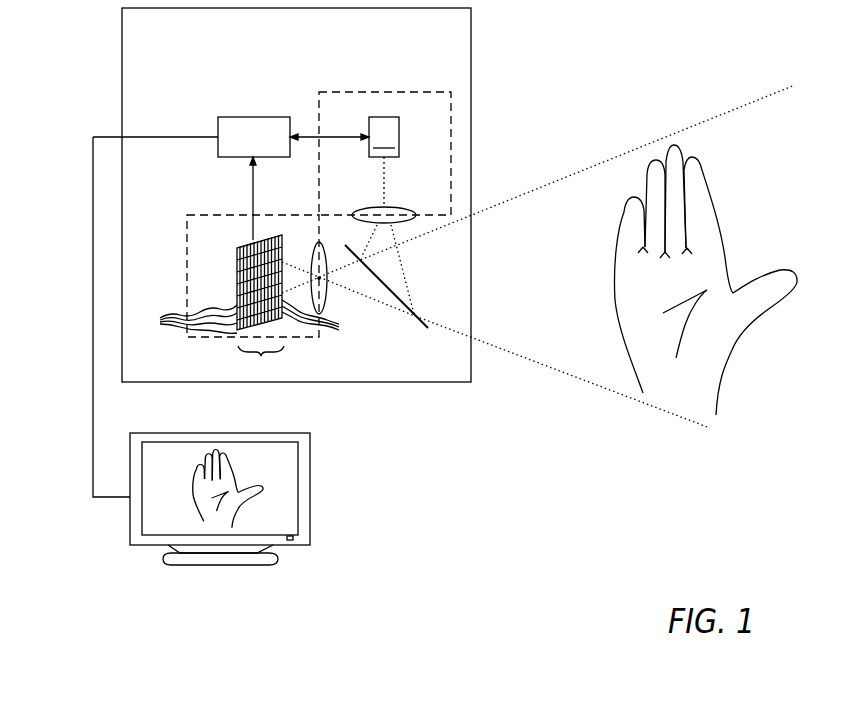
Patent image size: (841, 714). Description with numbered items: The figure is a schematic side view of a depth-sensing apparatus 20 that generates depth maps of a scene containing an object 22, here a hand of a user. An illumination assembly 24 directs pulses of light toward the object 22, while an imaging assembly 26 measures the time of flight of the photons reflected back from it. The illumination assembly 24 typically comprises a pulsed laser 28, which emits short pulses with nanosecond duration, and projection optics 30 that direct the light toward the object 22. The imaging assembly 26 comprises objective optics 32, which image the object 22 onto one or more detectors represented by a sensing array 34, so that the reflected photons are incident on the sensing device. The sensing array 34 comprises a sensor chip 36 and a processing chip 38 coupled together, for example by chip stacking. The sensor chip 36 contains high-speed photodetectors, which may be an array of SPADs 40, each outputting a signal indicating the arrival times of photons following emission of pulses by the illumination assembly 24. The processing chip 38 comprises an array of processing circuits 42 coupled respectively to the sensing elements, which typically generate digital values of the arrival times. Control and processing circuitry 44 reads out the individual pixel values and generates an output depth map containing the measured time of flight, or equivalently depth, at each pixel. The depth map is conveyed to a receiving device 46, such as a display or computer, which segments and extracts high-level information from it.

The depth-sensing apparatus 20 is at (121, 108).
The object 22 is at (722, 236).
The illumination assembly 24 is at (349, 92).
The imaging assembly 26 is at (187, 241).
The pulsed laser 28 is at (384, 137).
The projection optics 30 is at (408, 208).
The objective optics 32 is at (386, 297).
The sensing array 34 is at (261, 361).
The sensor chip 36 is at (283, 238).
The processing chip 38 is at (237, 275).
The SPADs 40 is at (322, 324).
The processing circuits 42 is at (242, 319).
The control and processing circuitry 44 is at (218, 120).
The receiving device 46 is at (310, 460).